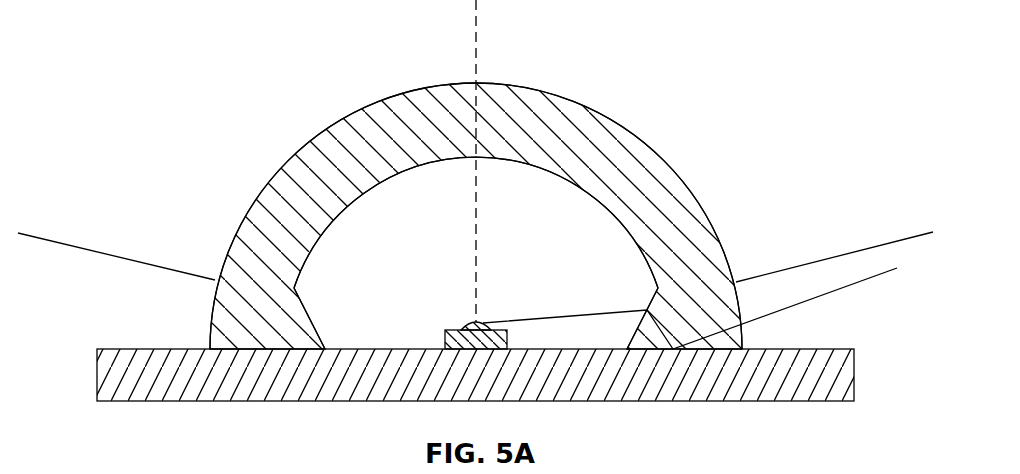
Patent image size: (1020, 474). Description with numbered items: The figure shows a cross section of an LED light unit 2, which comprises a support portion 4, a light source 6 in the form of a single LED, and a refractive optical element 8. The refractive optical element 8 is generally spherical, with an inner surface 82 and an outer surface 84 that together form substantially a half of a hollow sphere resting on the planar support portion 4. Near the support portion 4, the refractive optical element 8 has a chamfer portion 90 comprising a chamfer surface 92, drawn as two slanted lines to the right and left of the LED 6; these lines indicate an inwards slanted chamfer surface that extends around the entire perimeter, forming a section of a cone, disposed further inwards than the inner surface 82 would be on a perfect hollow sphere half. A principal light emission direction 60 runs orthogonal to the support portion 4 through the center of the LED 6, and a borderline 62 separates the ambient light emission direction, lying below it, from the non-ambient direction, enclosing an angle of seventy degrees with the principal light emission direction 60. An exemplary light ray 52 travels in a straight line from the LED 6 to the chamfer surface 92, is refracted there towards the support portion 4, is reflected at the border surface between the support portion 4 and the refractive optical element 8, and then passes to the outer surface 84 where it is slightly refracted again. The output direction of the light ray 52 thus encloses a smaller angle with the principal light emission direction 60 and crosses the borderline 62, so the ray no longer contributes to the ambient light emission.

The LED light unit 2 is at (770, 65).
The support portion 4 is at (808, 349).
The light source 6 is at (466, 325).
The refractive optical element 8 is at (341, 179).
The light ray 52 is at (553, 316).
The principal light emission direction 60 is at (476, 38).
The borderline 62 is at (885, 241).
The inner surface 82 is at (427, 163).
The outer surface 84 is at (617, 123).
The chamfer portion 90 is at (170, 300).
The chamfer surface 92 is at (312, 313).